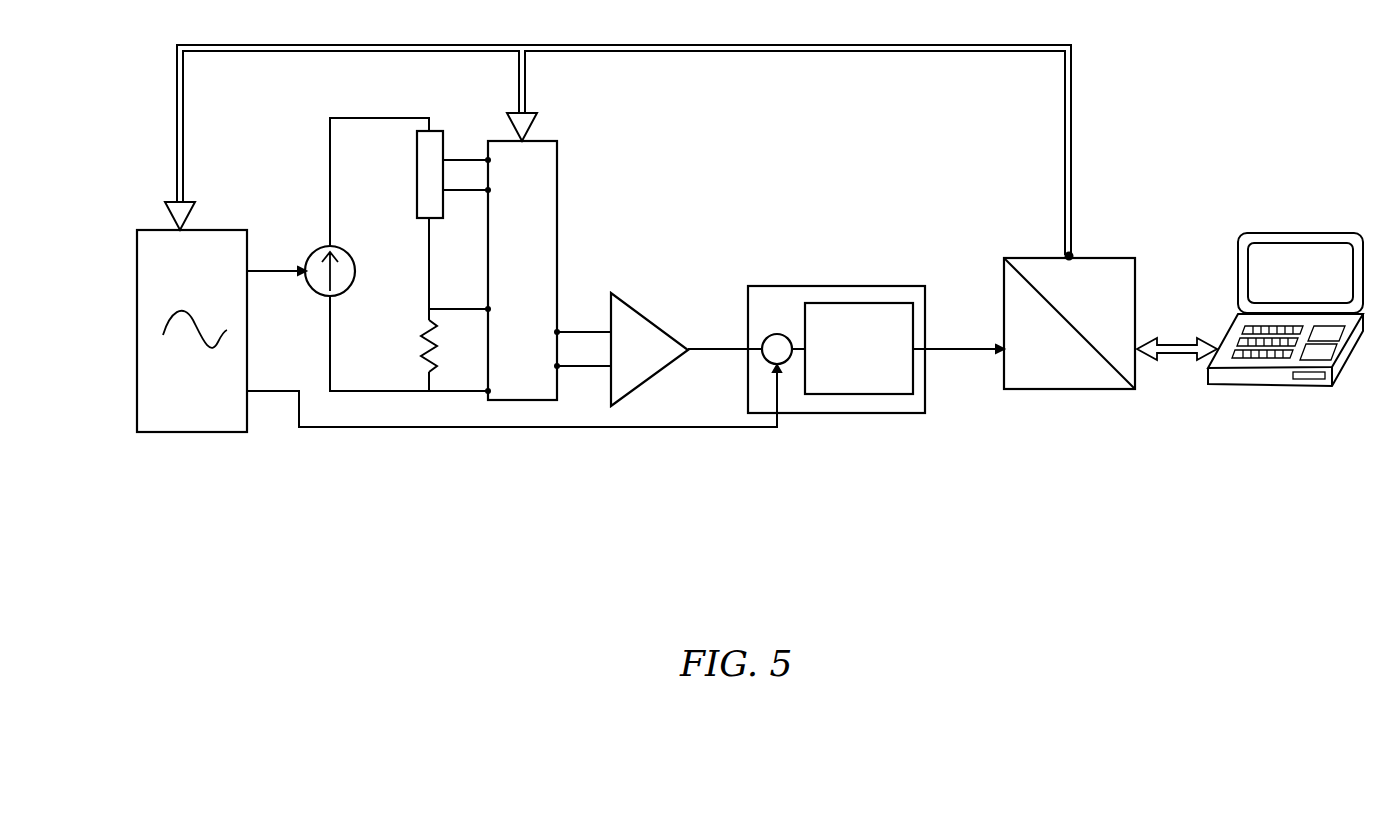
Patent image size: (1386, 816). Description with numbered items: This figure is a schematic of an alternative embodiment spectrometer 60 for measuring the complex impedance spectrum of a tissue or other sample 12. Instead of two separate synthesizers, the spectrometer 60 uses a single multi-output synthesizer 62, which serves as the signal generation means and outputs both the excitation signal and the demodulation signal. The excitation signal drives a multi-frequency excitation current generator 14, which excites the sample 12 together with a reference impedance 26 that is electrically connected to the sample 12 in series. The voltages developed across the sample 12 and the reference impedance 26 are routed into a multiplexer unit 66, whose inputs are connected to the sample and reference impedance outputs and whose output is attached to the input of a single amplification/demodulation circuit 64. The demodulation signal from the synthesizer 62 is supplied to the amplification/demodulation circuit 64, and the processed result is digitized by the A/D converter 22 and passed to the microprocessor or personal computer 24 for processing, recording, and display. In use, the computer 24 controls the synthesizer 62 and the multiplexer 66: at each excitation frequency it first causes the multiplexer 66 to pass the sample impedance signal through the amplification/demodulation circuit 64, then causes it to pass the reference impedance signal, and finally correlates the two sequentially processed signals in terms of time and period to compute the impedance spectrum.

The sample 12 is at (446, 138).
The multi-frequency excitation current generator 14 is at (355, 274).
The two channel A/D converter 22 is at (1076, 412).
The microprocessor or personal computer 24 is at (1258, 385).
The reference impedance 26 is at (418, 336).
The alternative embodiment spectrometer 60 is at (352, 497).
The multi-output synthesizer 62 is at (205, 433).
The amplification/demodulation circuit 64 is at (925, 440).
The multiplexer unit 66 is at (557, 178).